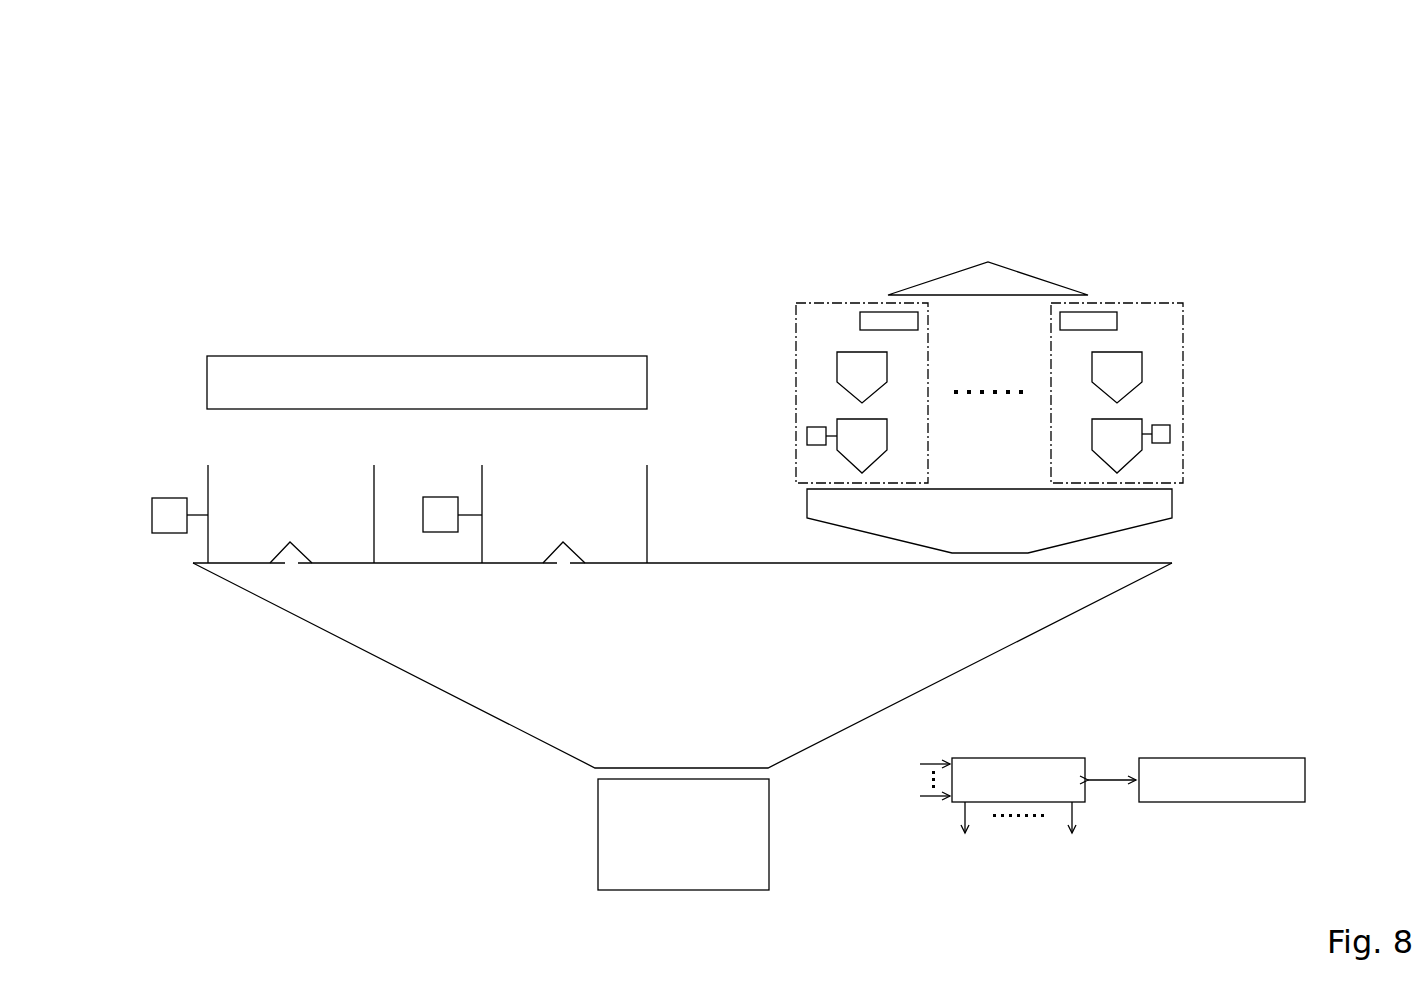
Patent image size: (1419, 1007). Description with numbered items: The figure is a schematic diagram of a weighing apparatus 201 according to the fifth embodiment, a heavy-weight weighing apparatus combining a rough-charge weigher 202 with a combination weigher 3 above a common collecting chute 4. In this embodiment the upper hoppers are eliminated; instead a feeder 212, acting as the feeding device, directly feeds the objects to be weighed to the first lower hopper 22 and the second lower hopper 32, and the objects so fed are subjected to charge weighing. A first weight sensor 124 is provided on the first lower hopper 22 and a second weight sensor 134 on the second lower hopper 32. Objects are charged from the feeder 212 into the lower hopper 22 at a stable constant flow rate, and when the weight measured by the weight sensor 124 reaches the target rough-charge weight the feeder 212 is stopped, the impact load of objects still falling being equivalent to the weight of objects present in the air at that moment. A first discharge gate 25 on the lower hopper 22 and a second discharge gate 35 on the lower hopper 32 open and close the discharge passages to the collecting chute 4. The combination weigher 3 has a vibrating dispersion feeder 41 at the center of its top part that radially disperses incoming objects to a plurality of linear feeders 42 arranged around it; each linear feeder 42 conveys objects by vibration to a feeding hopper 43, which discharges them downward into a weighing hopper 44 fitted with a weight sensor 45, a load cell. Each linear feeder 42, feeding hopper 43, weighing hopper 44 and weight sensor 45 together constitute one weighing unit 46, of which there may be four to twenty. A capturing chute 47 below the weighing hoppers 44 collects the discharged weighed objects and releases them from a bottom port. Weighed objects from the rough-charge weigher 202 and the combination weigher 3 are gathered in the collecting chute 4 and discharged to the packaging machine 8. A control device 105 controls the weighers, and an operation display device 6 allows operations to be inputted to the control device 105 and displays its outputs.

The weighing apparatus 201 is at (1210, 153).
The rough-charge weigher 202 is at (475, 296).
The feeder 212 is at (294, 356).
The first lower hopper 22 is at (208, 478).
The first weight sensor 124 is at (152, 513).
The second weight sensor 134 is at (440, 497).
The second lower hopper 32 is at (648, 520).
The first discharge gate 25 is at (252, 565).
The second discharge gate 35 is at (520, 565).
The collecting chute 4 is at (483, 718).
The packaging machine 8 is at (597, 860).
The combination weigher 3 is at (993, 183).
The dispersion feeder 41 is at (957, 272).
The linear feeder 42 is at (880, 312).
The feeding hopper 43 is at (837, 366).
The weighing hopper 44 is at (848, 460).
The weight sensor 45 is at (807, 436).
The weighing unit 46 is at (796, 320).
The capturing chute 47 is at (1147, 522).
The control device 105 is at (1014, 757).
The operation display device 6 is at (1229, 757).